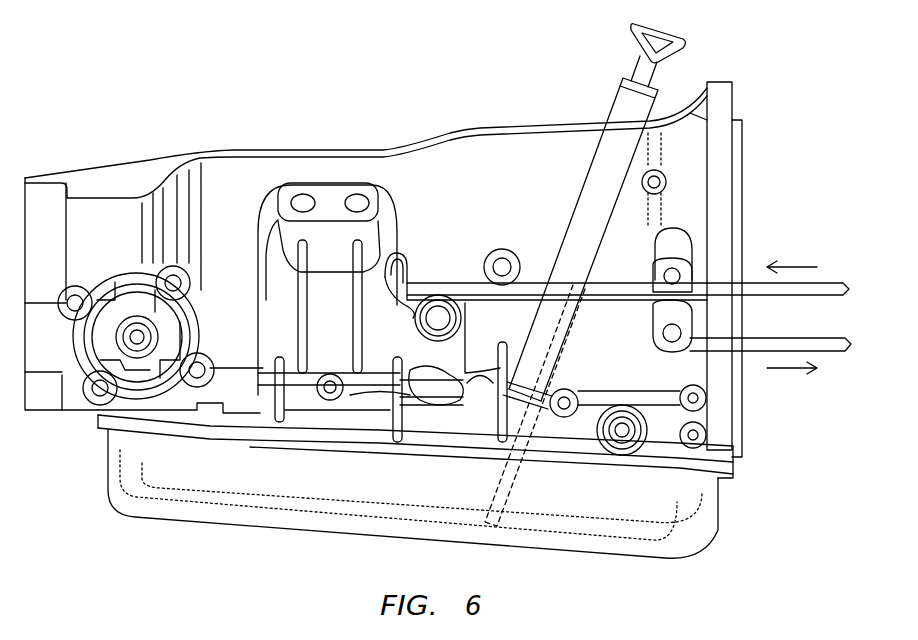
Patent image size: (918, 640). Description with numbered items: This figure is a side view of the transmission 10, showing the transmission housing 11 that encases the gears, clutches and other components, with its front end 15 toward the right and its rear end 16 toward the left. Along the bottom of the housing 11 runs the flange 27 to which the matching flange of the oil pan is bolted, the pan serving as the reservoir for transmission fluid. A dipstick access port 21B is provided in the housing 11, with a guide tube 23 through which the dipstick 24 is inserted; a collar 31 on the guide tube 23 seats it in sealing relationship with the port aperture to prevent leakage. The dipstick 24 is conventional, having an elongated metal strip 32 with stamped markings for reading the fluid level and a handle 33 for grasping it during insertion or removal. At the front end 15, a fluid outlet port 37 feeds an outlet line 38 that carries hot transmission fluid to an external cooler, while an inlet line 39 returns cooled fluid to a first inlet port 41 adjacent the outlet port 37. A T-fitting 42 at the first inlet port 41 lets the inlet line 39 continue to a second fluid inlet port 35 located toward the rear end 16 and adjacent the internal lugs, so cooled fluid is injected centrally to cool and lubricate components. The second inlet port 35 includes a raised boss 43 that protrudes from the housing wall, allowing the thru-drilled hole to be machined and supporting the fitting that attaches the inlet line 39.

The transmission 10 is at (320, 102).
The transmission housing 11 is at (497, 122).
The front end 15 is at (755, 106).
The rear end 16 is at (28, 164).
The dipstick access port 21B is at (520, 420).
The guide tube 23 is at (577, 213).
The dipstick 24 is at (582, 194).
The flange 27 is at (406, 436).
The collar 31 is at (555, 390).
The elongated metal strip 32 is at (490, 486).
The handle 33 is at (633, 32).
The fluid inlet port 35 is at (411, 250).
The fluid outlet port 37 is at (675, 345).
The outlet line 38 is at (800, 336).
The inlet line 39 is at (788, 300).
The first inlet port 41 is at (677, 212).
The T-fitting 42 is at (660, 277).
The raised boss 43 is at (409, 266).